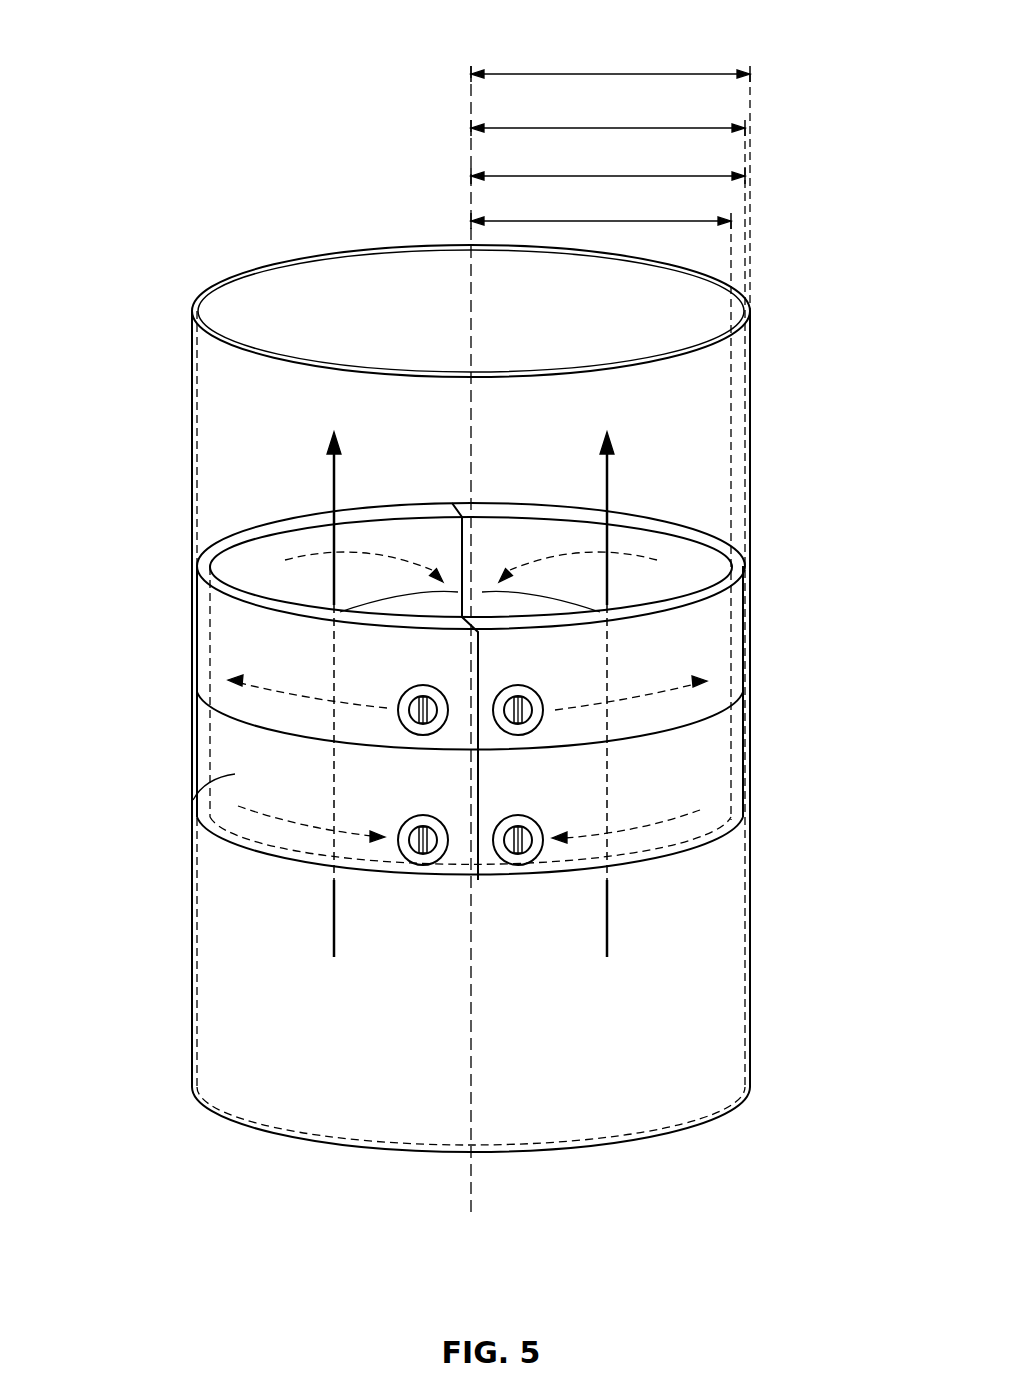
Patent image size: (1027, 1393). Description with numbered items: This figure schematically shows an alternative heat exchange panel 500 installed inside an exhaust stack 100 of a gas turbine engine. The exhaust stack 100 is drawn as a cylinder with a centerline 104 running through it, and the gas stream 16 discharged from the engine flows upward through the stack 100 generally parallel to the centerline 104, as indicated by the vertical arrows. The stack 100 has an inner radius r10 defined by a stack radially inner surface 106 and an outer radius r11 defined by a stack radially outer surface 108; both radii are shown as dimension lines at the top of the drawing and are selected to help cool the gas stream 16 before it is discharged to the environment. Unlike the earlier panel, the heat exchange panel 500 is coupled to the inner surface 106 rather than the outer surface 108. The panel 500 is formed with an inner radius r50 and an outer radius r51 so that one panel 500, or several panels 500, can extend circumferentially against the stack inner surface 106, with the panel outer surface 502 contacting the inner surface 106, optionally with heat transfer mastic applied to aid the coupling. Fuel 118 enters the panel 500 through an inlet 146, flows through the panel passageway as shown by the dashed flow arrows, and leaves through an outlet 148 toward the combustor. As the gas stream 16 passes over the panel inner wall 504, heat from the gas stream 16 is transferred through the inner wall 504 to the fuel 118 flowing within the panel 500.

The exhaust stack 100 is at (133, 38).
The centerline 104 is at (471, 303).
The stack radially inner surface 106 is at (197, 928).
The stack radially outer surface 108 is at (192, 985).
The gas stream 16 is at (334, 918).
The fuel 118 is at (390, 547).
The inlet 146 is at (513, 720).
The outlet 148 is at (513, 850).
The heat exchange panel 500 is at (472, 702).
The panel outer surface 502 is at (548, 669).
The panel inner wall 504 is at (703, 585).
The outer radius r11 is at (597, 74).
The inner radius r10 is at (597, 128).
The outer radius r51 is at (597, 176).
The inner radius r50 is at (597, 221).